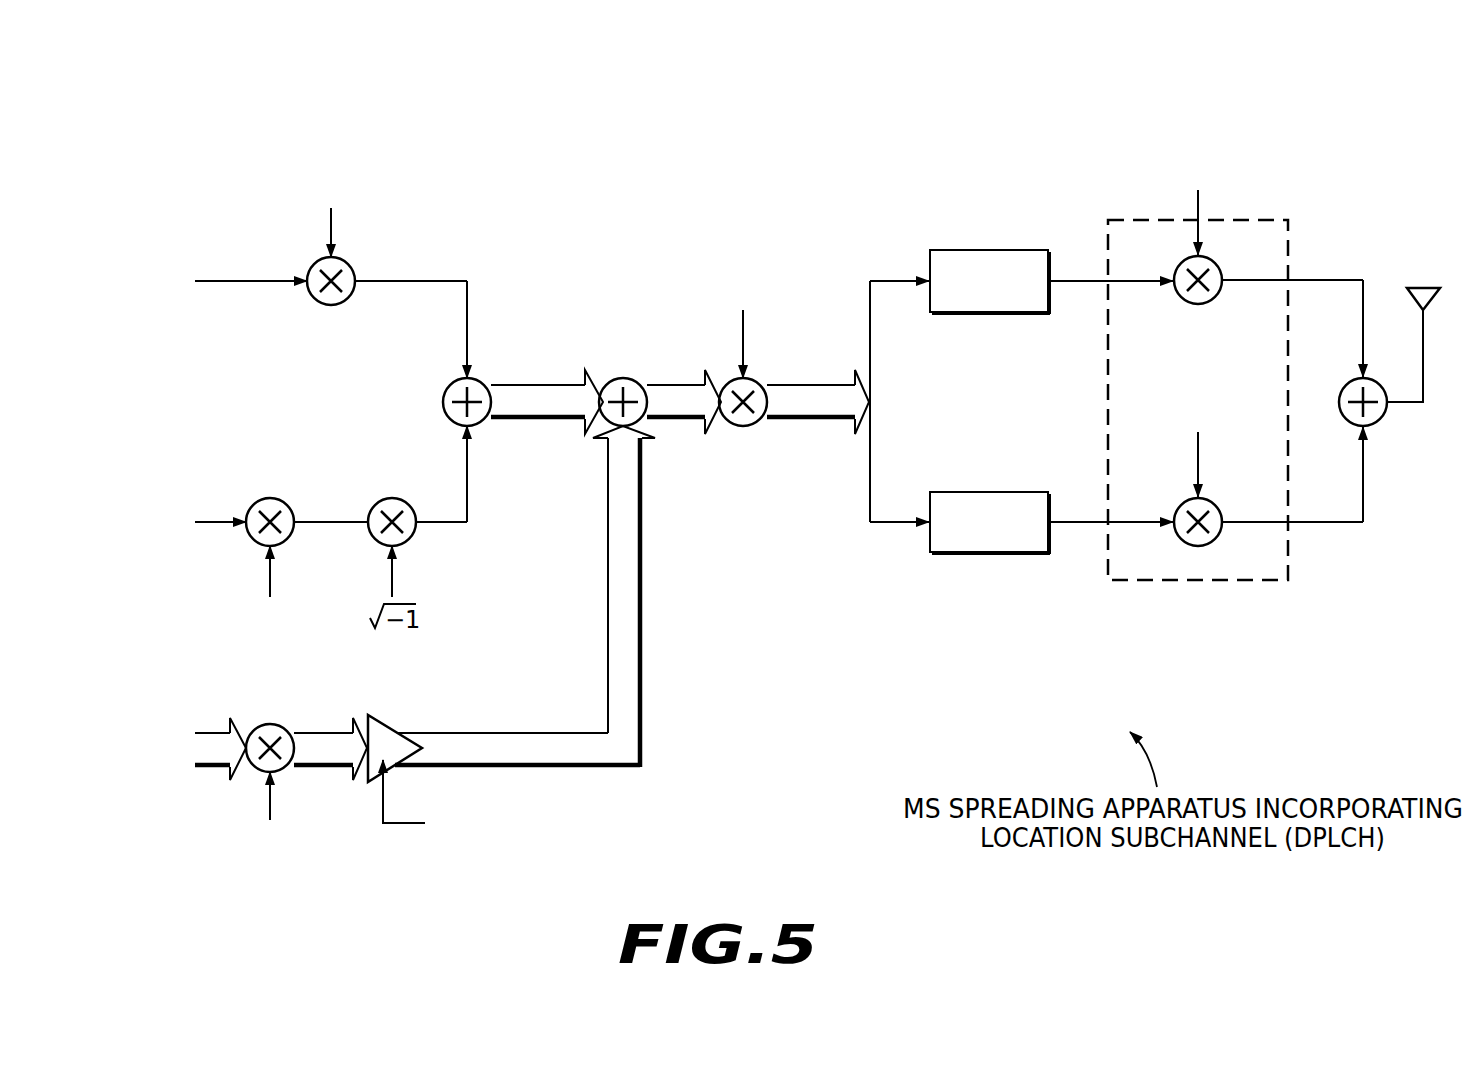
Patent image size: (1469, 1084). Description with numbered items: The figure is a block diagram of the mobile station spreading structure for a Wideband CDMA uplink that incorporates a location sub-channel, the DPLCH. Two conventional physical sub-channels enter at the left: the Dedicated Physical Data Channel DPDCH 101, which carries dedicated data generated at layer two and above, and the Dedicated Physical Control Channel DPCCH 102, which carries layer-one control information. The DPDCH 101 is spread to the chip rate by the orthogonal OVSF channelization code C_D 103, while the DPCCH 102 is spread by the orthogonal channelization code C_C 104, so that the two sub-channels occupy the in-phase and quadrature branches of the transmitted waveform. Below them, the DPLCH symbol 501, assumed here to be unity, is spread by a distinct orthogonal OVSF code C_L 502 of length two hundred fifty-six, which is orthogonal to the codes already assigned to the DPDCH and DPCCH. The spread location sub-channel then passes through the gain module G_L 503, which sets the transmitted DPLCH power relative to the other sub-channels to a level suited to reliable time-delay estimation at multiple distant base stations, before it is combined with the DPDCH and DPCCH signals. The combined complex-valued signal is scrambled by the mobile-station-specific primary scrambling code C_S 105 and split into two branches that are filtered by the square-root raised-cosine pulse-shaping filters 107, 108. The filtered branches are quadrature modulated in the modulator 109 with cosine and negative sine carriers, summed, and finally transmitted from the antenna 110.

The Dedicated Physical Data Channel (DPDCH) 101 is at (234, 281).
The Dedicated Physical Control Channel (DPCCH) 102 is at (203, 525).
The channelization code C_D 103 is at (332, 197).
The channelization code C_C 104 is at (270, 606).
The primary scrambling code C_S 105 is at (744, 336).
The pulse-shaping filter 107 is at (978, 491).
The pulse-shaping filter 108 is at (982, 313).
The quadrature modulator 109 is at (1289, 558).
The antenna 110 is at (1417, 286).
The DPLCH symbol 501 is at (203, 749).
The OVSF code C_L 502 is at (269, 834).
The gain module G_L 503 is at (423, 789).